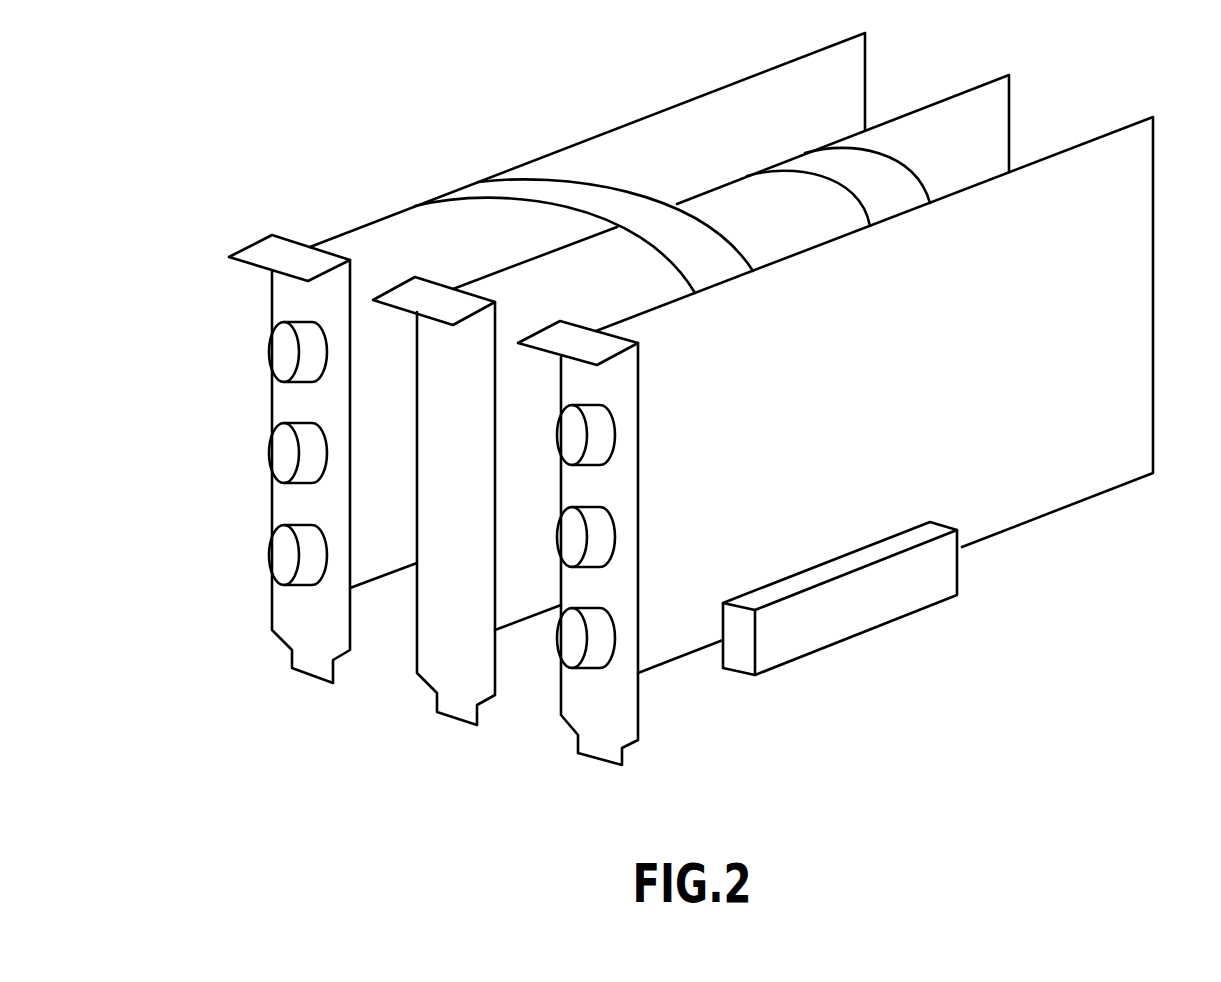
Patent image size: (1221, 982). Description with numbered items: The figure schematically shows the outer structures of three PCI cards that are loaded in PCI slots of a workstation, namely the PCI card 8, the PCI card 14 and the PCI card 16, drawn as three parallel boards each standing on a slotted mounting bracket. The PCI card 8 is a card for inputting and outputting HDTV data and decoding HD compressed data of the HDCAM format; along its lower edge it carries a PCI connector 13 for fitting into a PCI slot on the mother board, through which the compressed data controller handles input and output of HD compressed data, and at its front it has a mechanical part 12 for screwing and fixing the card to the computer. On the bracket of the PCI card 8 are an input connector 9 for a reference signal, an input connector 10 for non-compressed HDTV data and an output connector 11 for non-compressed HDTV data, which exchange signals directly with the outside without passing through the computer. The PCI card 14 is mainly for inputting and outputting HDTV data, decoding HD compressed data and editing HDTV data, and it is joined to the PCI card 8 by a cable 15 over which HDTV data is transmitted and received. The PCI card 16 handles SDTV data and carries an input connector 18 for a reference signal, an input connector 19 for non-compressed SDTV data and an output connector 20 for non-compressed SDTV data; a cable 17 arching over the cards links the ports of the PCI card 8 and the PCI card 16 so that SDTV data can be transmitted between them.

The PCI card 8 is at (1063, 492).
The input connector 9 is at (572, 436).
The input connector 10 is at (572, 538).
The output connector 11 is at (572, 640).
The mechanical part 12 is at (570, 343).
The PCI connector 13 is at (865, 618).
The PCI card 14 is at (977, 127).
The cable 15 is at (833, 170).
The PCI card 16 is at (680, 125).
The cable 17 is at (502, 195).
The input connector 18 is at (284, 353).
The input connector 19 is at (284, 556).
The output connector 20 is at (284, 454).